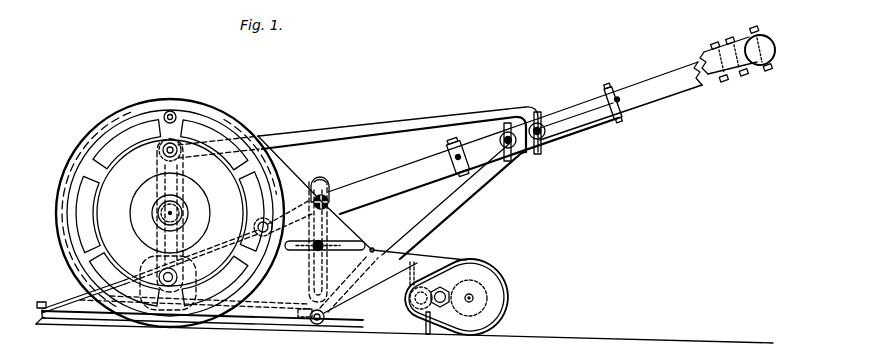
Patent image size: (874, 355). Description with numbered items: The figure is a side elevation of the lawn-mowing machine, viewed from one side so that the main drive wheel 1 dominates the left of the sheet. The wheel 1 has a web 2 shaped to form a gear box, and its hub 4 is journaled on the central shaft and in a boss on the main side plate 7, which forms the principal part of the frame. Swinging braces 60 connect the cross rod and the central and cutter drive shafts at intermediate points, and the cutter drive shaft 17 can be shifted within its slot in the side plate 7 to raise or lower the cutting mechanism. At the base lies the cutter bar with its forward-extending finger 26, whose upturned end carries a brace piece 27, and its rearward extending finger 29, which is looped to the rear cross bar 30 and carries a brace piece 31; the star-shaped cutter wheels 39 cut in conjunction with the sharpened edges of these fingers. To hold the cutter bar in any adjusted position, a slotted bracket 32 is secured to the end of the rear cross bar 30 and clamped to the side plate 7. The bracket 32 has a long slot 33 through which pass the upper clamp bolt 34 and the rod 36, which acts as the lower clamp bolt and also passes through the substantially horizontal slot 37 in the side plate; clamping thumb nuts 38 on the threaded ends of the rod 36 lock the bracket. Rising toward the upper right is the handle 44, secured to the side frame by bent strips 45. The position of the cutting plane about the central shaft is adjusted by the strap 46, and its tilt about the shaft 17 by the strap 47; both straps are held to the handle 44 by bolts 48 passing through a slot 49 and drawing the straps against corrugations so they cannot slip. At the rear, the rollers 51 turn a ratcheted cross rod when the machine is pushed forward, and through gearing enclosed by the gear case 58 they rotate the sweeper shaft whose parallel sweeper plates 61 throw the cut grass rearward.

The main drive wheel 1 is at (97, 131).
The web 2 is at (174, 208).
The hub 4 is at (188, 213).
The main side plate 7 is at (307, 242).
The cutter drive shaft 17 is at (160, 272).
The forward-extending finger 26 is at (76, 320).
The brace piece 27 is at (52, 300).
The rearward extending finger 29 is at (285, 323).
The rear cross bar 30 is at (326, 318).
The brace piece 31 is at (258, 305).
The slotted bracket 32 is at (329, 182).
The long slot 33 is at (325, 179).
The upper clamp bolt 34 is at (330, 202).
The rod 36 is at (348, 230).
The slot 37 is at (366, 252).
The clamping thumb nut 38 is at (331, 251).
The cutter wheel 39 is at (100, 326).
The handle 44 is at (672, 88).
The bent strip 45 is at (413, 178).
The strap 46 is at (436, 124).
The strap 47 is at (461, 206).
The bolt 48 is at (513, 149).
The slot 49 is at (583, 117).
The rear roller 51 is at (503, 284).
The gear case 58 is at (447, 308).
The swinging brace 60 is at (177, 160).
The sweeper plate 61 is at (415, 262).